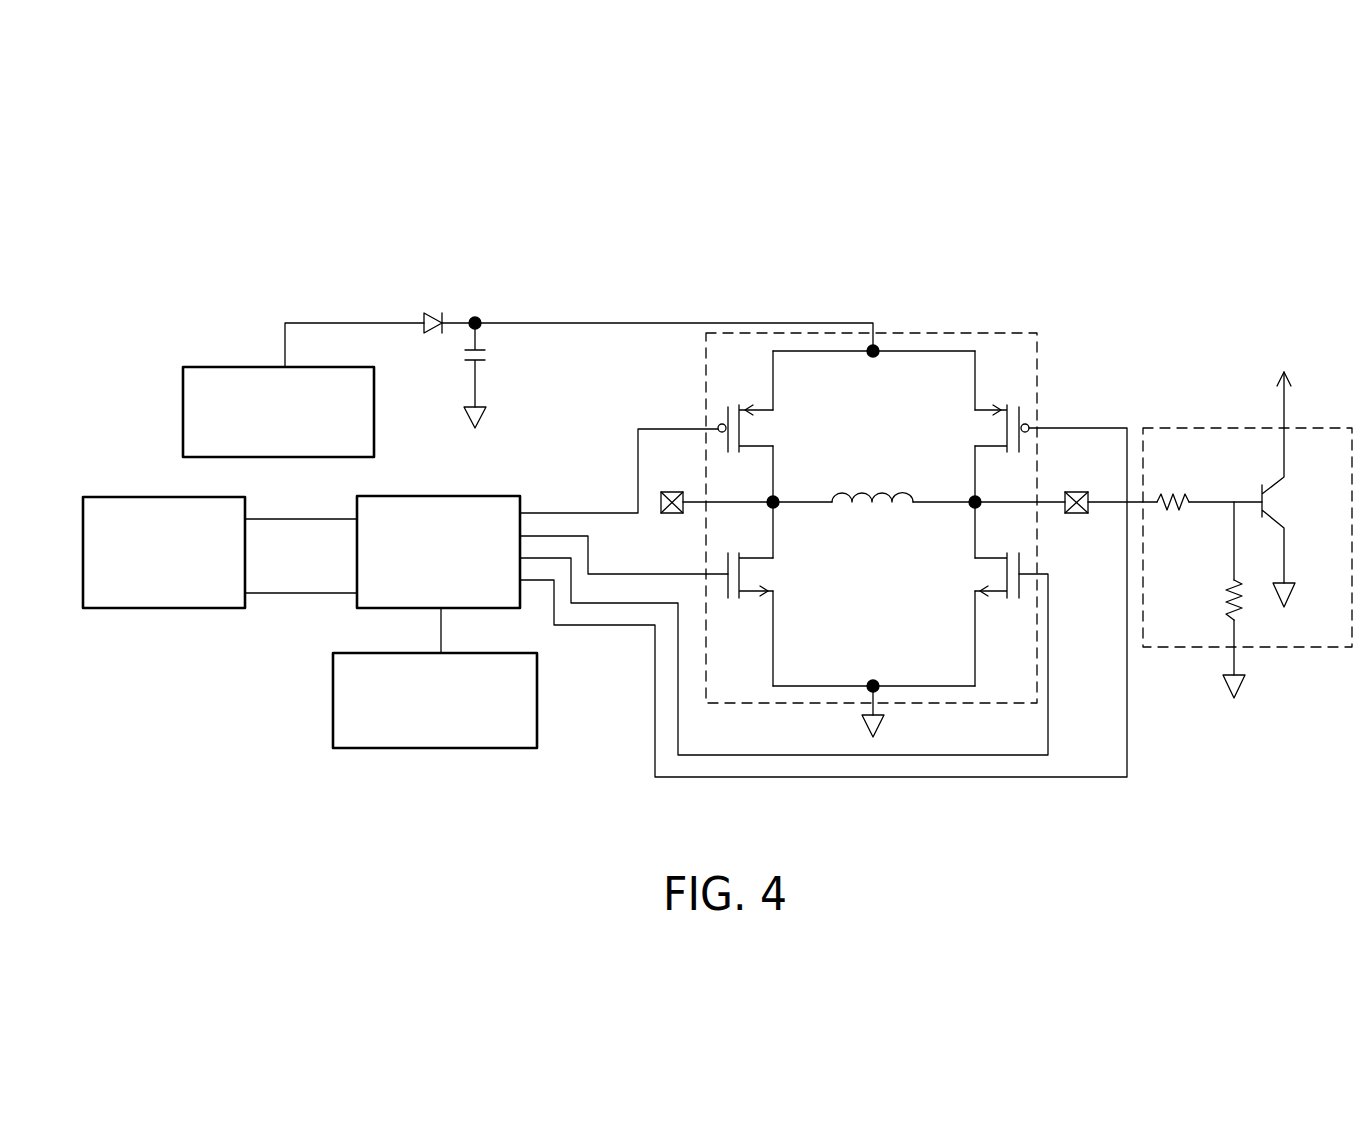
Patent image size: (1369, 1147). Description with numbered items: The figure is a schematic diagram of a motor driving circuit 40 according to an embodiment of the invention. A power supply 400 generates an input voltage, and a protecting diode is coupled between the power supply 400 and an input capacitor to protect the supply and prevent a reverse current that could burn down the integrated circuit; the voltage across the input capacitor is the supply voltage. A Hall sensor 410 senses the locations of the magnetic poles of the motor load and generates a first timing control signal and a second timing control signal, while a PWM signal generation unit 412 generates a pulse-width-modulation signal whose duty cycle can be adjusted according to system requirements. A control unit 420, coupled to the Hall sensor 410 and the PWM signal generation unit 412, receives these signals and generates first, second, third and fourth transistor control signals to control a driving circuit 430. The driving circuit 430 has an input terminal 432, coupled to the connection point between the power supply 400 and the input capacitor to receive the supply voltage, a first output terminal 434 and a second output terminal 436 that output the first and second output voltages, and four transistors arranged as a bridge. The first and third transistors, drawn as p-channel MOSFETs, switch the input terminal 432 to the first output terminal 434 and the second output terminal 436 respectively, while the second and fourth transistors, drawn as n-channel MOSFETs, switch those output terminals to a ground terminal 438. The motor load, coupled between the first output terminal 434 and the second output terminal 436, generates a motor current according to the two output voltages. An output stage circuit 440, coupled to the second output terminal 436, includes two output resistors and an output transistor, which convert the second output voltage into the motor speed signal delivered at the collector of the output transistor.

The motor driving circuit 40 is at (1236, 216).
The power supply 400 is at (218, 367).
The Hall sensor 410 is at (125, 497).
The PWM signal generation unit 412 is at (537, 700).
The control unit 420 is at (440, 497).
The driving circuit 430 is at (1040, 348).
The input terminal 432 is at (878, 349).
The first output terminal 434 is at (777, 506).
The second output terminal 436 is at (971, 506).
The ground terminal 438 is at (878, 692).
The output stage circuit 440 is at (1182, 428).